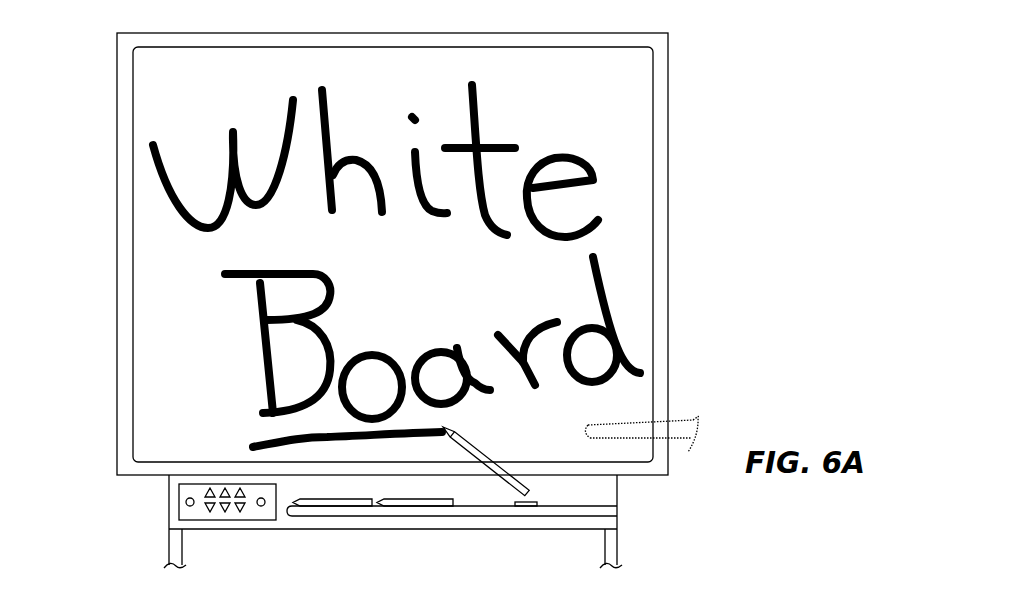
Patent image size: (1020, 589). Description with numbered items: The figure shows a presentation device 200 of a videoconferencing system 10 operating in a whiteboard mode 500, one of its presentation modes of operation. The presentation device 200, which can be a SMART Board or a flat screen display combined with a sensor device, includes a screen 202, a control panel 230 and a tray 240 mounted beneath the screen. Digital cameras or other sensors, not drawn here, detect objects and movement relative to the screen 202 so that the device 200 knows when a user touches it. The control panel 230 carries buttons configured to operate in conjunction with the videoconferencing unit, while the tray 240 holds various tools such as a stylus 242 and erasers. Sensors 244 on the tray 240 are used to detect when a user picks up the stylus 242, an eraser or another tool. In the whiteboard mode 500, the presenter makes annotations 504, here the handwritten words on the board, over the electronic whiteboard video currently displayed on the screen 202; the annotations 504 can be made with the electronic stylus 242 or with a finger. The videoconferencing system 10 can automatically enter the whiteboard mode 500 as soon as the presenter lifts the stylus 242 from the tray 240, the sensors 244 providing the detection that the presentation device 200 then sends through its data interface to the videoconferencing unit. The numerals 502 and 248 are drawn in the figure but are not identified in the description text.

The videoconferencing system 10 is at (695, 54).
The presentation device 200 is at (176, 33).
The screen 202 is at (275, 67).
The control panel 230 is at (169, 505).
The tray 240 is at (600, 506).
The stylus 242 is at (465, 440).
The sensors 244 is at (535, 490).
The user hand 248 is at (642, 437).
The whiteboard mode 500 is at (61, 66).
The writing area 502 is at (592, 70).
The annotations 504 is at (640, 372).